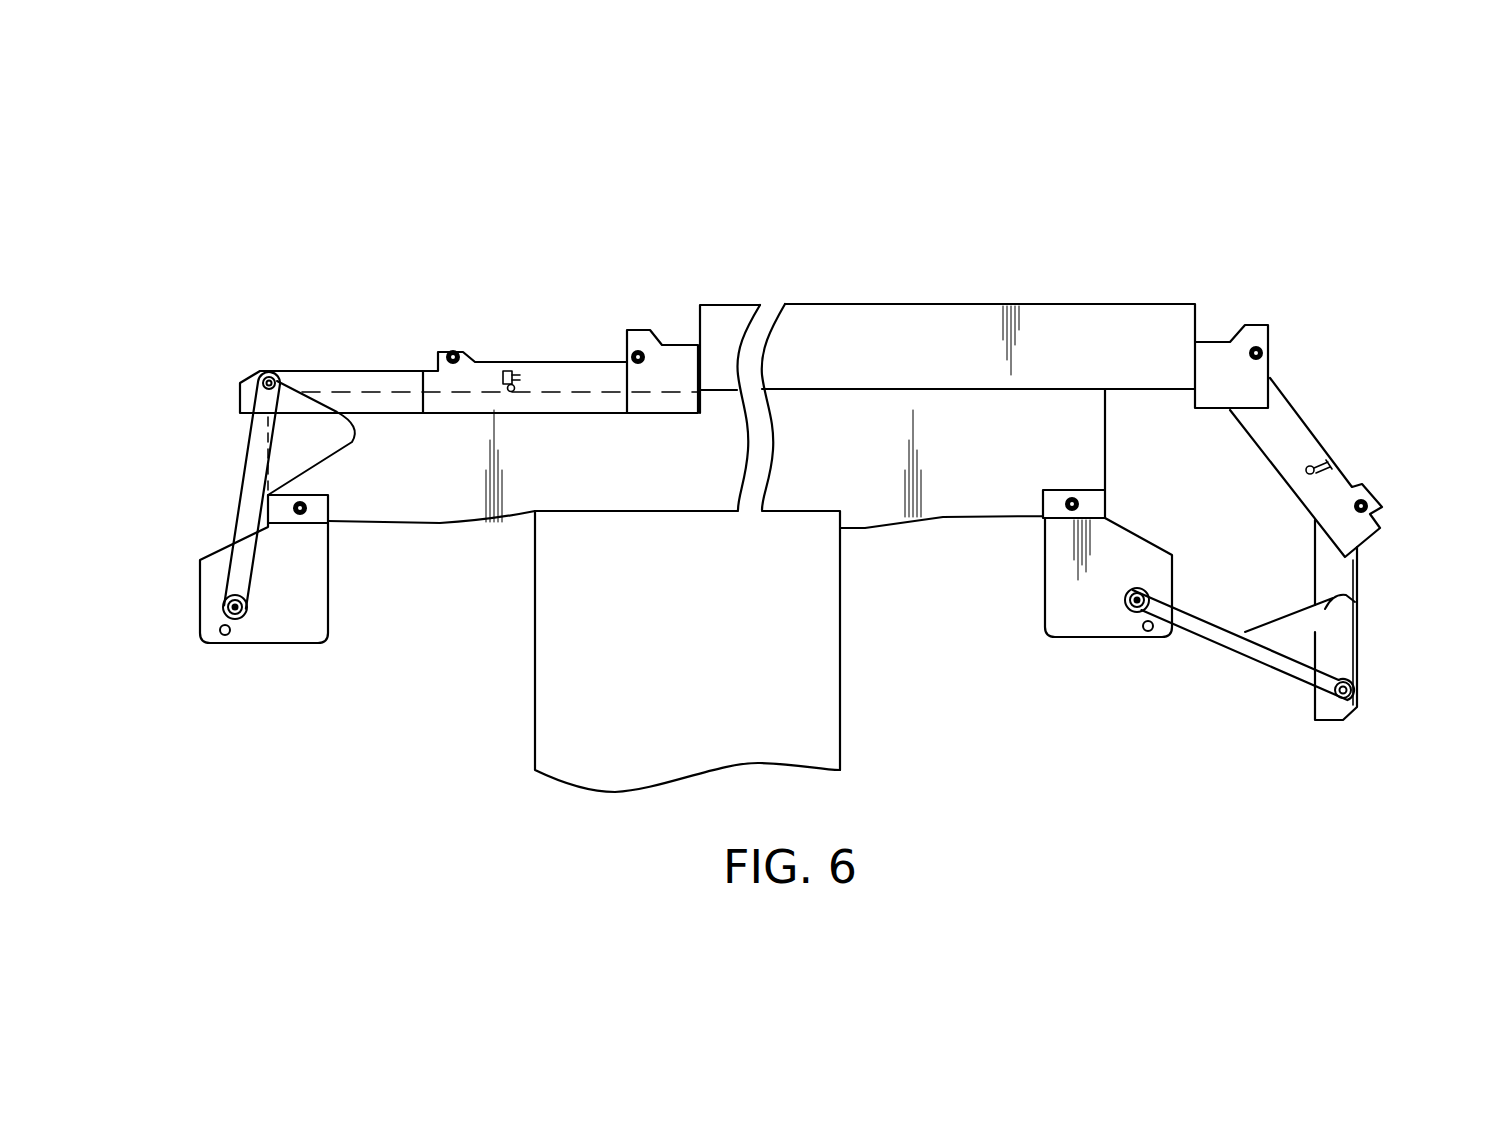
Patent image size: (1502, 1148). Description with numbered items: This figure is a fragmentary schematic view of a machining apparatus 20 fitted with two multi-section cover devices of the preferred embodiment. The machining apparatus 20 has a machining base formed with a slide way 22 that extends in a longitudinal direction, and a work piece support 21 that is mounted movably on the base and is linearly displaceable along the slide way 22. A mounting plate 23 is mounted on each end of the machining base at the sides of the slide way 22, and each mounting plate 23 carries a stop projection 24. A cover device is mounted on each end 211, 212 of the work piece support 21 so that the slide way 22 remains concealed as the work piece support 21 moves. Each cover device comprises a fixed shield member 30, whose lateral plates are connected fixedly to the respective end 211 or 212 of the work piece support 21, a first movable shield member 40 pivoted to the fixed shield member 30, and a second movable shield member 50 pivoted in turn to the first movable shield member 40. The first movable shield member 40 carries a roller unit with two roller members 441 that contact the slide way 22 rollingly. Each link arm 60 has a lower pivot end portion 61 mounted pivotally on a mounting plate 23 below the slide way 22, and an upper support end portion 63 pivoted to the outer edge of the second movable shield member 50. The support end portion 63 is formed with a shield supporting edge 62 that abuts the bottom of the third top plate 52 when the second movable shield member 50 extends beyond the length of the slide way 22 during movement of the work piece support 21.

The machining apparatus 20 is at (861, 247).
The work piece support 21 is at (948, 318).
The end of the work piece support 211 is at (1153, 320).
The end of the work piece support 212 is at (724, 315).
The slide way 22 is at (580, 488).
The mounting plate 23 is at (315, 627).
The stop projection 24 is at (227, 637).
The fixed shield member 30 is at (680, 322).
The first movable shield member 40 is at (588, 347).
The roller member 441 is at (522, 370).
The second movable shield member 50 is at (380, 355).
The third top plate 52 is at (1360, 655).
The link arm 60 is at (230, 460).
The lower pivot end portion 61 is at (250, 570).
The shield supporting edge 62 is at (326, 365).
The upper support end portion 63 is at (328, 428).